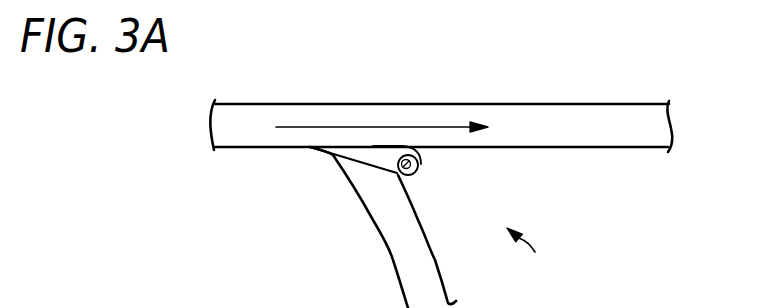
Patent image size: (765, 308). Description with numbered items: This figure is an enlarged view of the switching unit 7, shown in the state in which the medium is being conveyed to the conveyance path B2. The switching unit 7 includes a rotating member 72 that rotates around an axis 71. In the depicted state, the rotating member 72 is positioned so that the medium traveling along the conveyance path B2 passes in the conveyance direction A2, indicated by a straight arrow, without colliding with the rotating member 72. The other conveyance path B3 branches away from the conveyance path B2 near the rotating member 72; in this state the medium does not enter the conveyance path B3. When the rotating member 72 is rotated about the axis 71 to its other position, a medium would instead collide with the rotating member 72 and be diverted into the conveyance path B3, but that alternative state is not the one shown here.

The conveyance path B2 is at (580, 104).
The conveyance direction A2 is at (403, 130).
The axis 71 is at (418, 164).
The rotating member 72 is at (413, 177).
The conveyance path B3 is at (385, 248).
The switching unit 7 is at (529, 257).